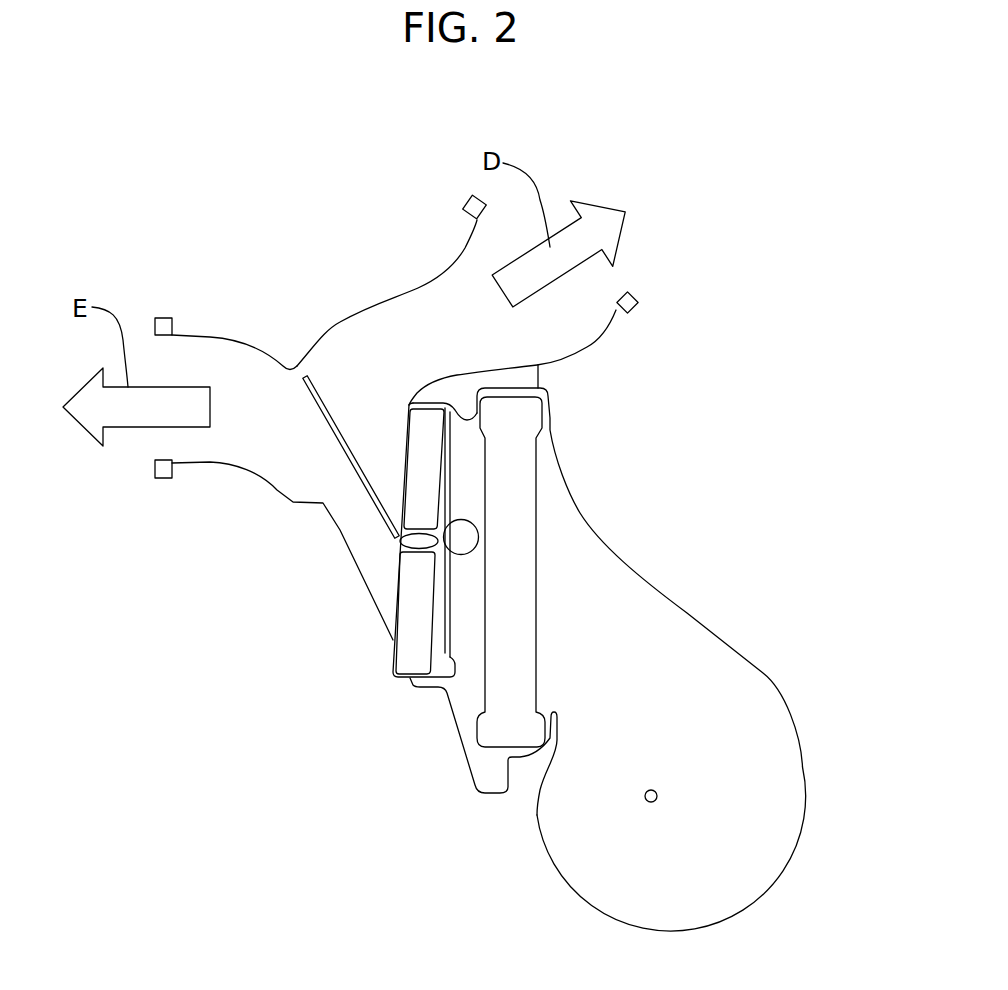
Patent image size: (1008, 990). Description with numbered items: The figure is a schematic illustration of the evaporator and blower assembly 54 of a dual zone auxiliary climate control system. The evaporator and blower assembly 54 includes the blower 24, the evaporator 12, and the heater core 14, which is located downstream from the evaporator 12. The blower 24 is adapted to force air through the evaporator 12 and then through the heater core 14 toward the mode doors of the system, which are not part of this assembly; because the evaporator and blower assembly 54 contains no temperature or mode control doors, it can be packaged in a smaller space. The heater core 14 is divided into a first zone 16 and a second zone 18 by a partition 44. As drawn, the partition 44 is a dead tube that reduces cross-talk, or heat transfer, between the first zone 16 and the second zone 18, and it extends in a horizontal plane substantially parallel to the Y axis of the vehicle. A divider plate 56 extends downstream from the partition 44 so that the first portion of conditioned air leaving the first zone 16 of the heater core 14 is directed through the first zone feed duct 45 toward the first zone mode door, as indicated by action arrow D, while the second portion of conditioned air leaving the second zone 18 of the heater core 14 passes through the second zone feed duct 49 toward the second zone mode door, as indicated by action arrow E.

The evaporator 12 is at (525, 535).
The heater core 14 is at (387, 415).
The first zone 16 is at (413, 482).
The second zone 18 is at (407, 648).
The blower 24 is at (760, 672).
The partition 44 is at (400, 543).
The first zone feed duct 45 is at (437, 303).
The second zone feed duct 49 is at (222, 357).
The evaporator and blower assembly 54 is at (723, 190).
The divider plate 56 is at (331, 440).